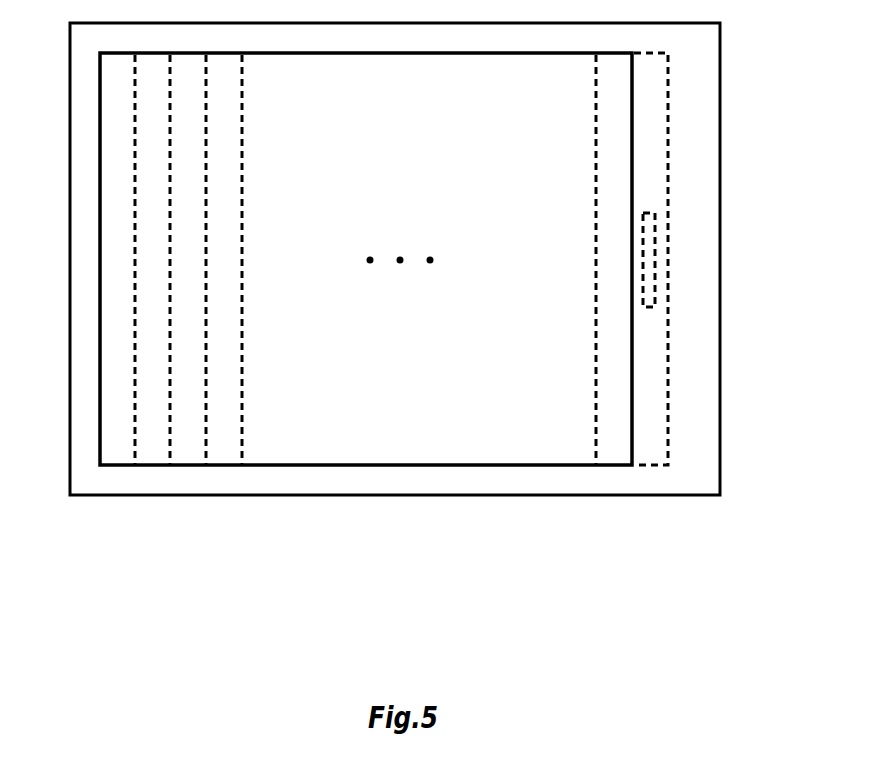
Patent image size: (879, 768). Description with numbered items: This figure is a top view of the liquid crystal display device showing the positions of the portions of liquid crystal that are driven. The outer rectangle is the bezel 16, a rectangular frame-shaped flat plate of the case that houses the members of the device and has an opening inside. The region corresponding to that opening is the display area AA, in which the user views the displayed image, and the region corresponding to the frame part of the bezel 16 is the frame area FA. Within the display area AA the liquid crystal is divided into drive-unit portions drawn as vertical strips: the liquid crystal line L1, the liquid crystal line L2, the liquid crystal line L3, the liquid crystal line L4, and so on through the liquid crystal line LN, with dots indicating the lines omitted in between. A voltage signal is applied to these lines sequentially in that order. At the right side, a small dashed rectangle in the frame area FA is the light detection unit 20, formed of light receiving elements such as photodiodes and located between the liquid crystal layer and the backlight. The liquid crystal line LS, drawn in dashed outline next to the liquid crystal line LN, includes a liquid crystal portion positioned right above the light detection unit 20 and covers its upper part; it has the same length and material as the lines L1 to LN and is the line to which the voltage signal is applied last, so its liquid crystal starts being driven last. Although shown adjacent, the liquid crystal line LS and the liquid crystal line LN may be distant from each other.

The bezel 16 is at (720, 460).
The frame area FA is at (697, 383).
The display area AA is at (366, 437).
The liquid crystal line L1 is at (117, 453).
The liquid crystal line L2 is at (153, 453).
The liquid crystal line L3 is at (190, 453).
The liquid crystal line L4 is at (223, 453).
The liquid crystal line LN is at (615, 453).
The liquid crystal line LS is at (648, 453).
The light detection unit 20 is at (652, 283).